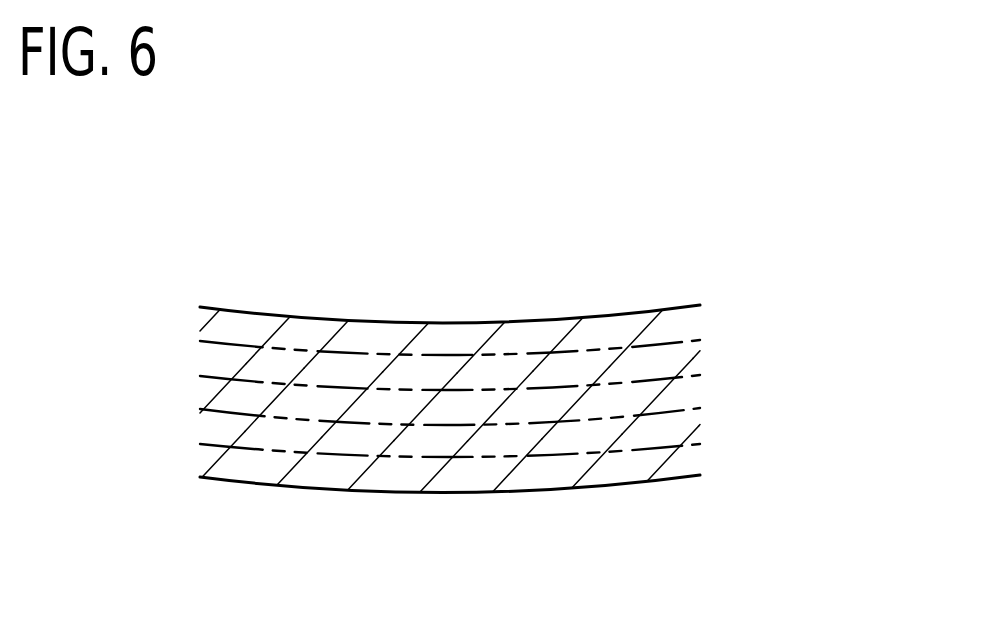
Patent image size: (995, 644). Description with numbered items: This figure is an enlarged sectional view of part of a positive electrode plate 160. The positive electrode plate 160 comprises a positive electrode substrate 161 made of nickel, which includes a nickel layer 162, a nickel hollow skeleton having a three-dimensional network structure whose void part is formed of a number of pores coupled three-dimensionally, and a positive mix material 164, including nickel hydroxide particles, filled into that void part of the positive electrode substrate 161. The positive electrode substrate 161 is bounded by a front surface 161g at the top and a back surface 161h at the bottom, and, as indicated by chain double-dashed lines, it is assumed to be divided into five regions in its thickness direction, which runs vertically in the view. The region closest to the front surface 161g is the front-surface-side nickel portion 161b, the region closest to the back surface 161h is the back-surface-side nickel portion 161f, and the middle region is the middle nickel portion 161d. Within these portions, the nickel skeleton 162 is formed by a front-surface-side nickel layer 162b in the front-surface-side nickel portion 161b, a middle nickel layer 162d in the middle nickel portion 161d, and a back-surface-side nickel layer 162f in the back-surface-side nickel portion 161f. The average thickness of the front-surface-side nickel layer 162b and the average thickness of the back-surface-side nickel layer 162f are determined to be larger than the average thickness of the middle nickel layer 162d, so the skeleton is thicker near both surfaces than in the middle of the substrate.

The positive electrode plate 160 is at (455, 210).
The positive electrode substrate 161 is at (813, 307).
The front-surface-side nickel portion 161b is at (717, 305).
The middle nickel portion 161d is at (717, 373).
The back-surface-side nickel portion 161f is at (717, 442).
The front surface 161g is at (535, 321).
The back surface 161h is at (528, 493).
The nickel layer 162 is at (466, 406).
The front-surface-side nickel layer 162b is at (315, 332).
The middle nickel layer 162d is at (637, 397).
The back-surface-side nickel layer 162f is at (318, 477).
The positive mix material 164 is at (232, 396).